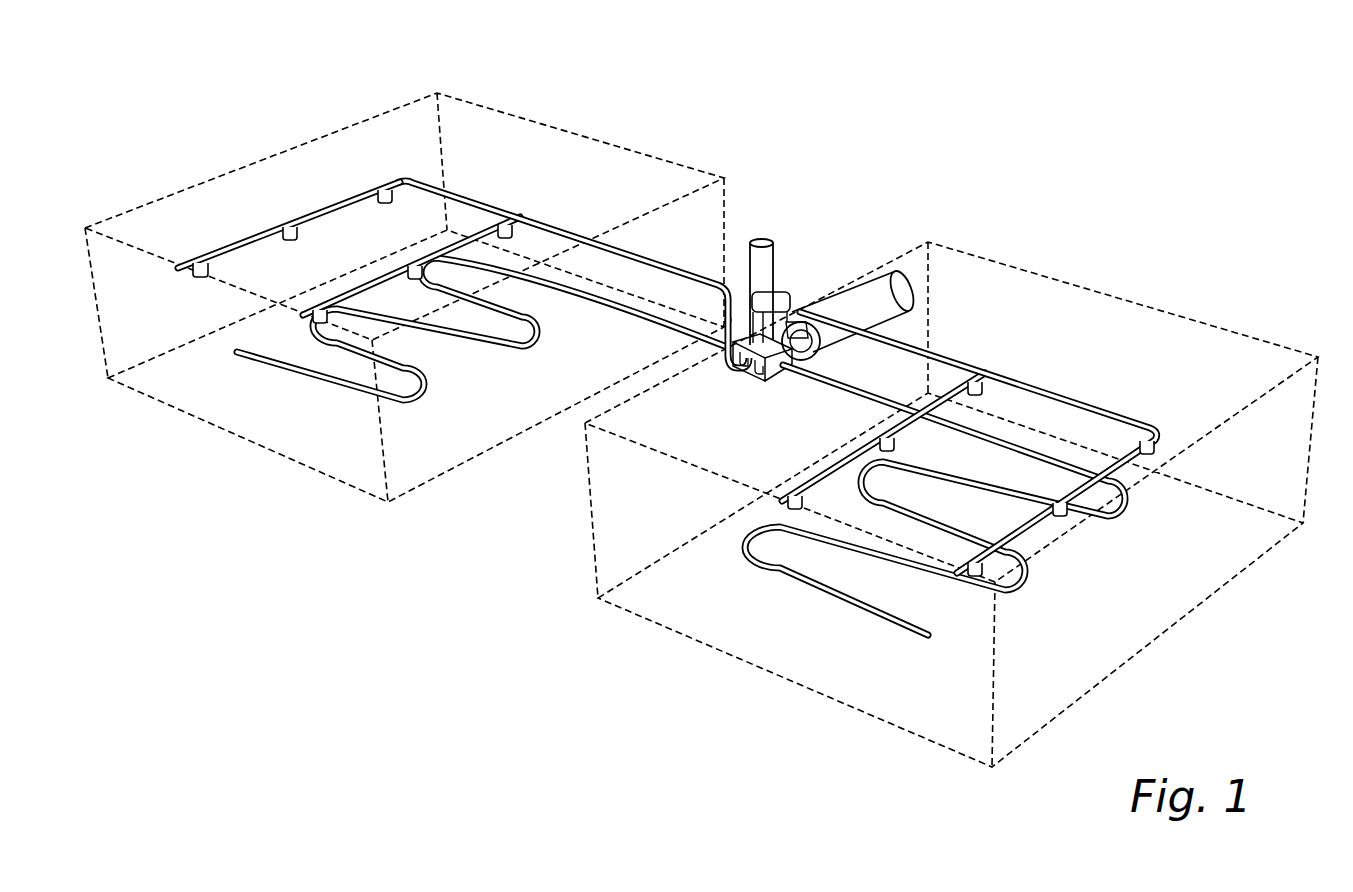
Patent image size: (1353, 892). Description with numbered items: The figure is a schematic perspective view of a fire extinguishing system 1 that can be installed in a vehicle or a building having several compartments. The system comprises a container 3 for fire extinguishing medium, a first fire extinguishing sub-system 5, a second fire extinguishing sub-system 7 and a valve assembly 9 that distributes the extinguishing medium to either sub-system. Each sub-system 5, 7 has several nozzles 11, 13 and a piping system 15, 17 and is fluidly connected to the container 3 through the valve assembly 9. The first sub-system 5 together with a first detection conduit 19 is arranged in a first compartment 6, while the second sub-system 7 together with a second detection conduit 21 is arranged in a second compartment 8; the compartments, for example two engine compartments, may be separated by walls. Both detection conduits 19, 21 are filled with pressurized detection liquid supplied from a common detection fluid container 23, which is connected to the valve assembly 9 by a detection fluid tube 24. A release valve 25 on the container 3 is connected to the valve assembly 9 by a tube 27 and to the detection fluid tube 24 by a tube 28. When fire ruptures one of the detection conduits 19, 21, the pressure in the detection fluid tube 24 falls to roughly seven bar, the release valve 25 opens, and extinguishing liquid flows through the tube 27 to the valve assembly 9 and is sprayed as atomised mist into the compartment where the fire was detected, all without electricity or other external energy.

The fire extinguishing system 1 is at (548, 160).
The container for fire extinguishing medium 3 is at (893, 290).
The first fire extinguishing sub-system 5 is at (336, 196).
The first compartment 6 is at (243, 165).
The second fire extinguishing sub-system 7 is at (1069, 386).
The second compartment 8 is at (1210, 323).
The valve assembly 9 is at (767, 380).
The nozzles 11 is at (200, 280).
The nozzles 13 is at (1167, 457).
The piping system 15 is at (463, 197).
The piping system 17 is at (1115, 410).
The first detection conduit 19 is at (267, 368).
The second detection conduit 21 is at (830, 600).
The detection fluid container 23 is at (760, 291).
The detection fluid tube 24 is at (752, 266).
The release valve 25 is at (808, 322).
The tube 27 is at (728, 350).
The tube 28 is at (793, 318).